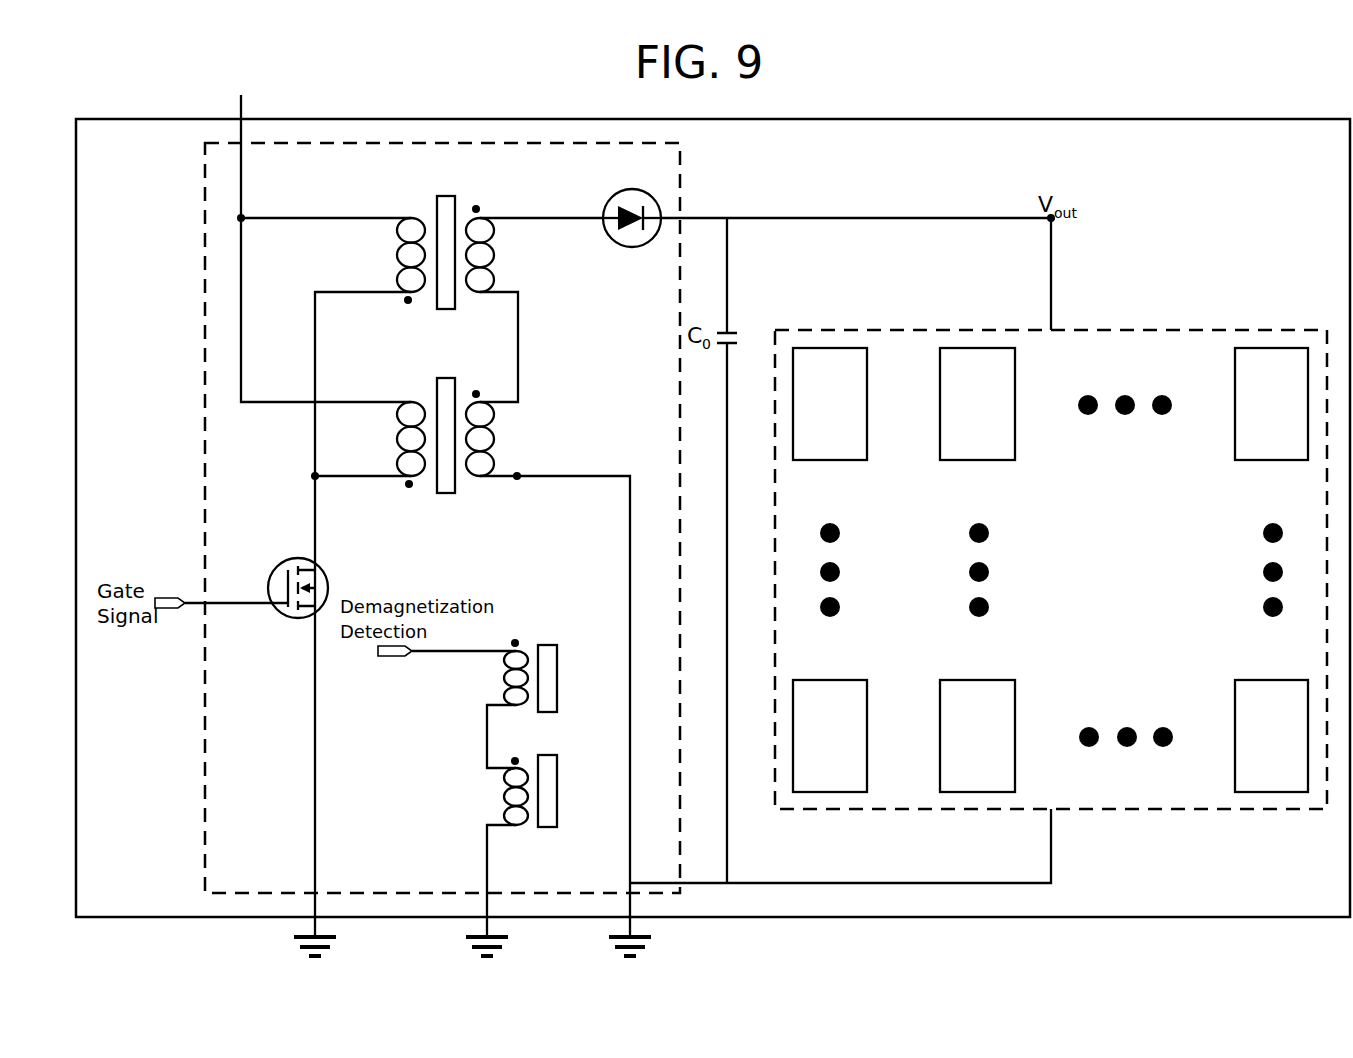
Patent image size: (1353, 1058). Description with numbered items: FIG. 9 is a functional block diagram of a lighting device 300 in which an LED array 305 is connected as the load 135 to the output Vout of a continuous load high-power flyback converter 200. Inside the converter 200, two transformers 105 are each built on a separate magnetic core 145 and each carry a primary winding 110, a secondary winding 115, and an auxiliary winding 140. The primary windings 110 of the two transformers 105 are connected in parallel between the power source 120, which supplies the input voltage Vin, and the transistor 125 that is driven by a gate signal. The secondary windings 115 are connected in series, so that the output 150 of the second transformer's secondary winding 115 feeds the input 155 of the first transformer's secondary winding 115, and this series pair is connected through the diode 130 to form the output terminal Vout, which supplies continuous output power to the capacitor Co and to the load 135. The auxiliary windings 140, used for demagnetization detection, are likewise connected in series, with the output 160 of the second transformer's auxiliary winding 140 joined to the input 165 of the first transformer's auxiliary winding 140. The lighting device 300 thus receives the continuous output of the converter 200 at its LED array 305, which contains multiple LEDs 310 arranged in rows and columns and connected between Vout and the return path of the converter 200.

The power source 120 is at (235, 116).
The continuous load high-power flyback converter 200 is at (445, 135).
The transformer 105 is at (479, 518).
The primary winding 110 is at (385, 267).
The secondary winding 115 is at (545, 267).
The magnetic core 145 is at (447, 204).
The input of the secondary winding 155 is at (534, 292).
The output of the secondary winding 150 is at (534, 401).
The diode 130 is at (653, 281).
The transistor 125 is at (268, 566).
The auxiliary winding 140 is at (446, 788).
The input of the auxiliary winding 165 is at (476, 706).
The output of the auxiliary winding 160 is at (476, 768).
The load 135 is at (1051, 546).
The lighting device 300 is at (1239, 194).
The LED array 305 is at (1051, 569).
The LED 310 is at (1290, 761).